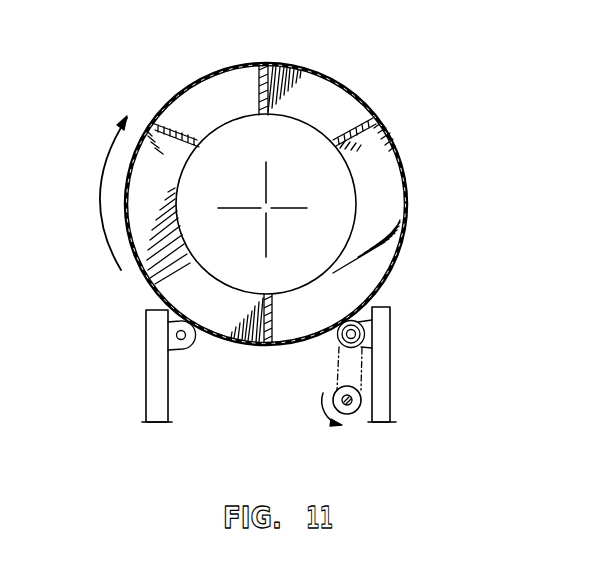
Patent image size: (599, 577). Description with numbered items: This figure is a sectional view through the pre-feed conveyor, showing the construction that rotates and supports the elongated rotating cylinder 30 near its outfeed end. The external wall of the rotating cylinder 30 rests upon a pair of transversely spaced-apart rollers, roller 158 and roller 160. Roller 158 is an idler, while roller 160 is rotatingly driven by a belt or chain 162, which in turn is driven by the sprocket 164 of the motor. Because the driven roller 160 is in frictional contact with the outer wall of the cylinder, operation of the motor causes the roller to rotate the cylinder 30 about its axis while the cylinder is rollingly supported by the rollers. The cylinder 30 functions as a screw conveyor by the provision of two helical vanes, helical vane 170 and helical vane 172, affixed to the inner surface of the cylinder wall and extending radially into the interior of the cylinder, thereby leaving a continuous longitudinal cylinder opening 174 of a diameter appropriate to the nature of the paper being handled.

The rotating cylinder 30 is at (405, 178).
The roller 158 is at (183, 348).
The roller 160 is at (338, 337).
The belt or chain 162 is at (337, 368).
The sprocket 164 is at (348, 413).
The helical vane 170 is at (352, 283).
The helical vane 172 is at (200, 103).
The longitudinal cylinder opening 174 is at (318, 182).